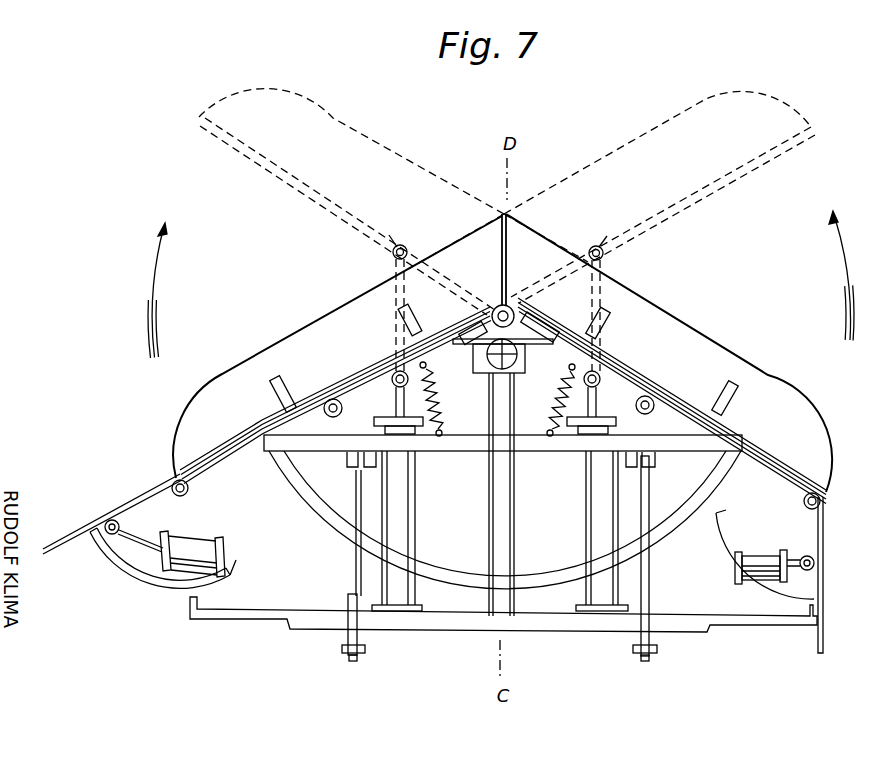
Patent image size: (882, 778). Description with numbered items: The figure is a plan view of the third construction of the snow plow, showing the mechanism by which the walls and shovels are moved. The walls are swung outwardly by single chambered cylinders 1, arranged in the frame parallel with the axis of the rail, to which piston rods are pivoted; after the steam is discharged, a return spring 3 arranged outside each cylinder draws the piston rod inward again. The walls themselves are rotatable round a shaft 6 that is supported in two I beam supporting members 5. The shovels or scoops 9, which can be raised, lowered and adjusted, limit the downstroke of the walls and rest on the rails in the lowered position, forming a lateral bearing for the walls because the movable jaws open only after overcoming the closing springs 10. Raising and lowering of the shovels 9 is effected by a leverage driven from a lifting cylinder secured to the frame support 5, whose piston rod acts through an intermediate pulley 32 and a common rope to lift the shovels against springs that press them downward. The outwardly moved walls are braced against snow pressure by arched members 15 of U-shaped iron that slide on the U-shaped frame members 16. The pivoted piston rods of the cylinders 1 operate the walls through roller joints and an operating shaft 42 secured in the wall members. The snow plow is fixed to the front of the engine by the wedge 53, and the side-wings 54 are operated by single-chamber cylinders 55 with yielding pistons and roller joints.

The single chambered cylinder 1 is at (412, 520).
The return spring 3 is at (441, 399).
The I beam supporting member 5 is at (508, 418).
The shaft 6 is at (527, 322).
The shovel 9 is at (358, 147).
The closing spring 10 is at (281, 388).
The arched member 15 is at (443, 561).
The U-shaped frame member 16 is at (651, 444).
The intermediate pulley 32 is at (473, 357).
The operating shaft 42 is at (392, 252).
The wedge 53 is at (360, 655).
The side-wing 54 is at (138, 500).
The single-chamber cylinder 55 is at (191, 541).